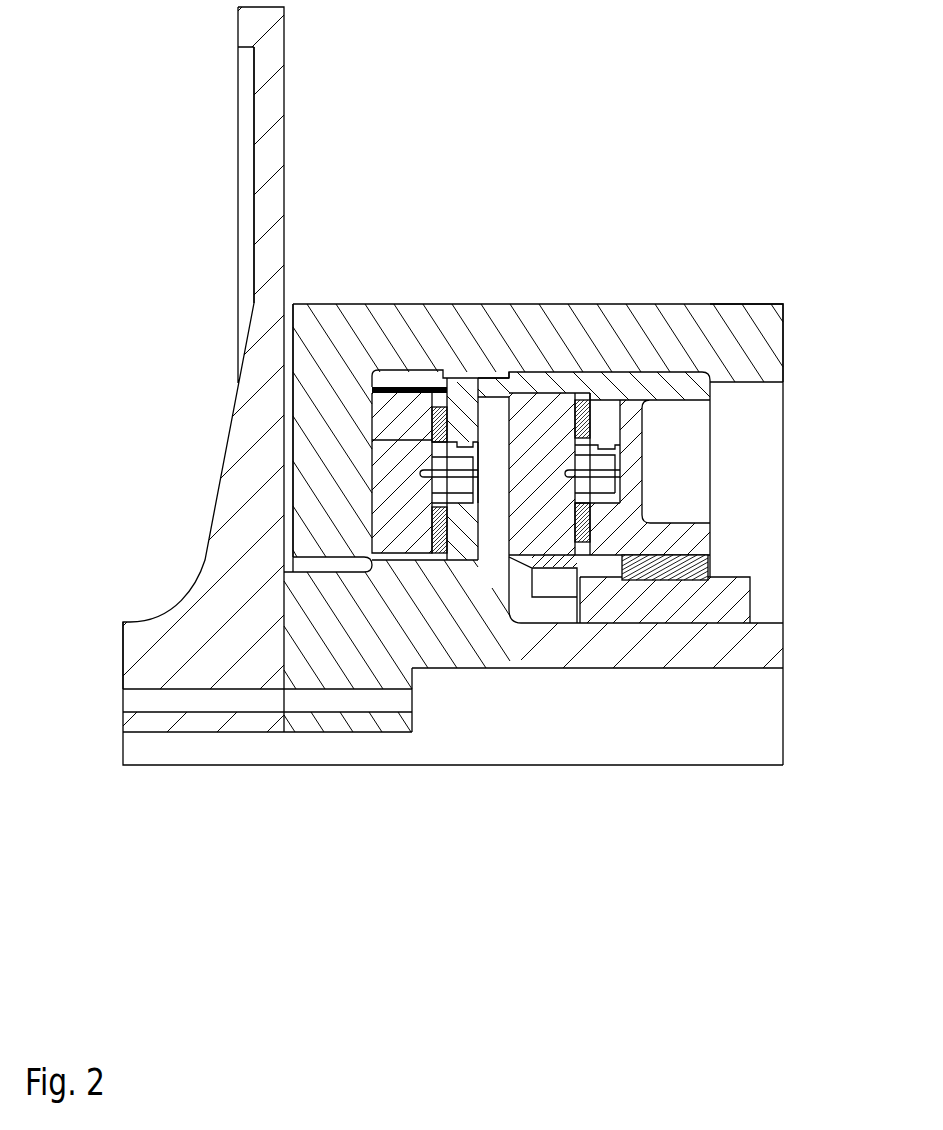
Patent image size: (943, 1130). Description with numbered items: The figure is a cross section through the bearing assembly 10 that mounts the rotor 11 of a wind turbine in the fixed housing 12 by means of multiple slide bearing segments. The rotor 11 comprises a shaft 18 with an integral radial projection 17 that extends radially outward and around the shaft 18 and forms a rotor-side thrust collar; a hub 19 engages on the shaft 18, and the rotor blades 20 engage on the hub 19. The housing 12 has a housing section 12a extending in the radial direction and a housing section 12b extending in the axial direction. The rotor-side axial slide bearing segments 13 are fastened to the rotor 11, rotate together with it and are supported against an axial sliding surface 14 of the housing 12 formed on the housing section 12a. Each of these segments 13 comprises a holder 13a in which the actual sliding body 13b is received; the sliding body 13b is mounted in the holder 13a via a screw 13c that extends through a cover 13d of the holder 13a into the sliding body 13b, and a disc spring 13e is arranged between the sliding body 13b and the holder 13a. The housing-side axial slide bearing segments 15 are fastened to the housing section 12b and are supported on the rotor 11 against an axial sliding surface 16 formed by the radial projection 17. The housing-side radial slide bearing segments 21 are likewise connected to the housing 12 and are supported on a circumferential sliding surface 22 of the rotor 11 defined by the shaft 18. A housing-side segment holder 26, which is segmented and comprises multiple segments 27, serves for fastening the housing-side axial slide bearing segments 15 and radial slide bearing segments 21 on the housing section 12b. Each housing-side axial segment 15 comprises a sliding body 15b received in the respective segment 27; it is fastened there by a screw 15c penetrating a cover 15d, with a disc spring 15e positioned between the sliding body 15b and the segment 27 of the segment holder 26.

The bearing assembly 10 is at (663, 80).
The rotor 11 is at (421, 447).
The housing 12 is at (497, 487).
The housing section 12a is at (330, 462).
The housing section 12b is at (768, 338).
The rotor-side axial slide bearing segment 13 is at (320, 575).
The holder 13a is at (459, 388).
The sliding body 13b is at (390, 487).
The screw 13c is at (425, 545).
The cover 13d is at (463, 487).
The disc spring 13e is at (440, 508).
The axial sliding surface 14 is at (390, 426).
The housing-side axial slide bearing segment 15 is at (677, 534).
The sliding body 15b is at (590, 428).
The screw 15c is at (575, 545).
The cover 15d is at (603, 488).
The disc spring 15e is at (588, 392).
The axial sliding surface 16 is at (497, 537).
The radial projection 17 is at (494, 397).
The shaft 18 is at (545, 640).
The hub 19 is at (148, 655).
The rotor blades 20 is at (270, 53).
The housing-side radial slide bearing segment 21 is at (687, 640).
The circumferential sliding surface 22 is at (741, 606).
The housing-side segment holder 26 is at (620, 400).
The segment 27 is at (679, 357).